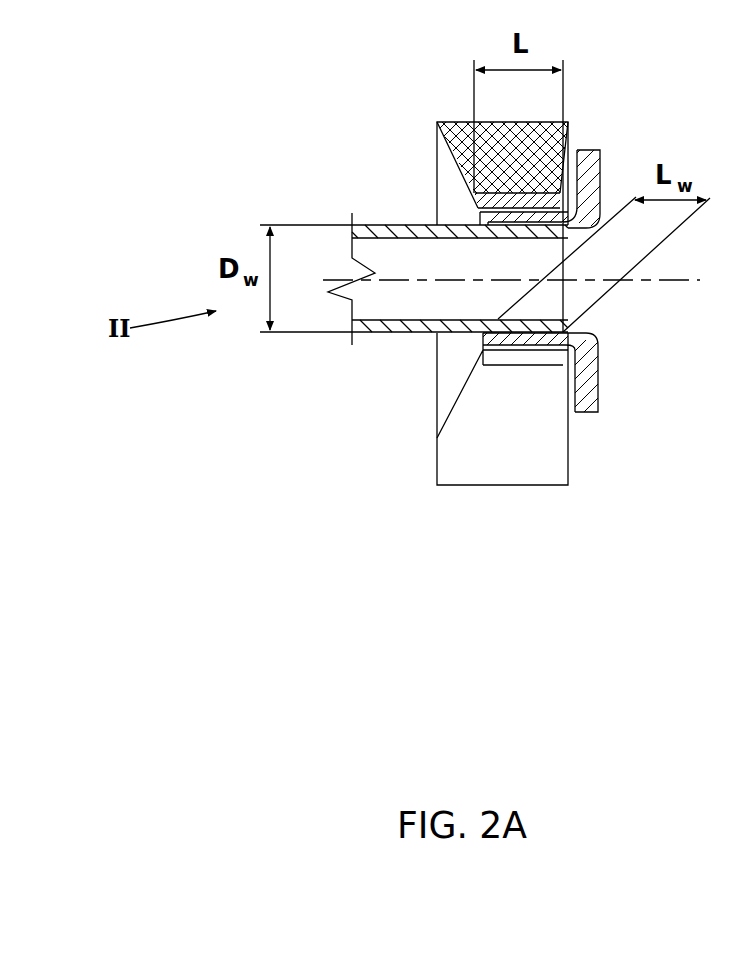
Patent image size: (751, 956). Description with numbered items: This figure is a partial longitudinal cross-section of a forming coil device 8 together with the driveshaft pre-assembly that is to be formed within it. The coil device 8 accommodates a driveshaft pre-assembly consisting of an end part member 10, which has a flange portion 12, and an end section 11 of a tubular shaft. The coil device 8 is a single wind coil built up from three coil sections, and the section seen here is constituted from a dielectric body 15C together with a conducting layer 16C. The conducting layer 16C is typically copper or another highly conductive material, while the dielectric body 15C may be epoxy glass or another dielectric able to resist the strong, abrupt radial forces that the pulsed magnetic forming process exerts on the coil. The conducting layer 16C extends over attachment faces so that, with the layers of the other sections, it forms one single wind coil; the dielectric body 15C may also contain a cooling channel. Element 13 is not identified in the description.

The forming coil device 8 is at (370, 165).
The end part member 10 is at (566, 331).
The end section of tubular shaft 11 is at (405, 326).
The flange portion 12 is at (588, 397).
The lower block 13 is at (547, 438).
The dielectric body 15C is at (568, 121).
The conducting layer 16C is at (578, 150).